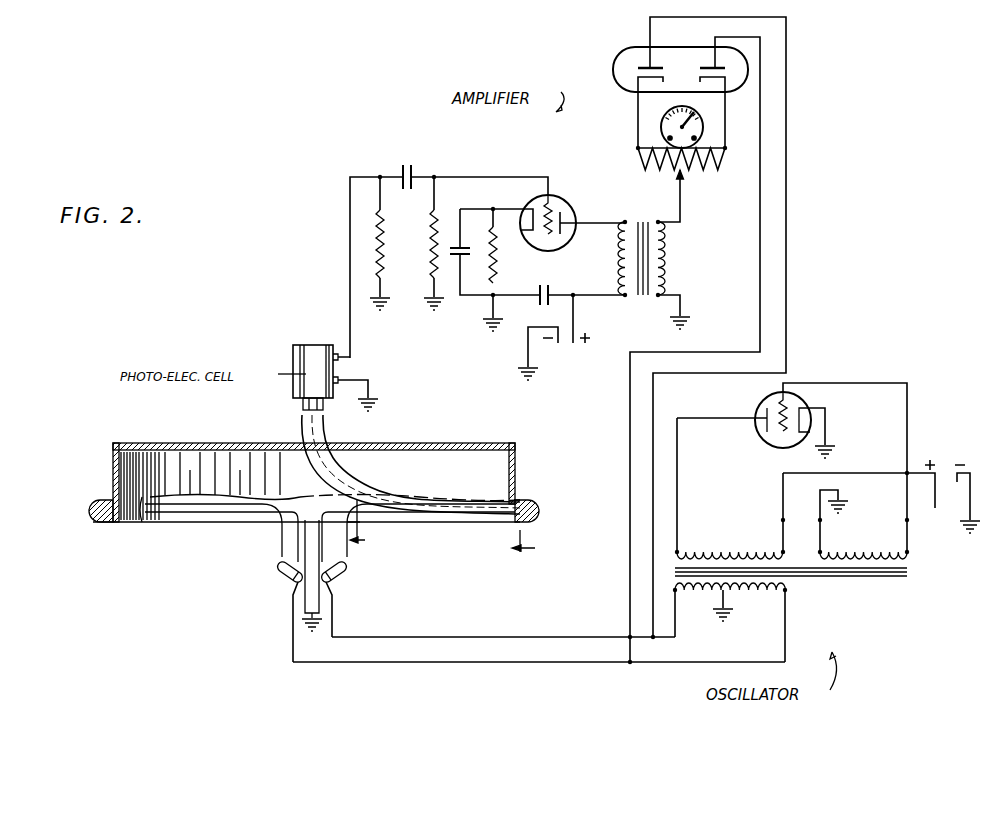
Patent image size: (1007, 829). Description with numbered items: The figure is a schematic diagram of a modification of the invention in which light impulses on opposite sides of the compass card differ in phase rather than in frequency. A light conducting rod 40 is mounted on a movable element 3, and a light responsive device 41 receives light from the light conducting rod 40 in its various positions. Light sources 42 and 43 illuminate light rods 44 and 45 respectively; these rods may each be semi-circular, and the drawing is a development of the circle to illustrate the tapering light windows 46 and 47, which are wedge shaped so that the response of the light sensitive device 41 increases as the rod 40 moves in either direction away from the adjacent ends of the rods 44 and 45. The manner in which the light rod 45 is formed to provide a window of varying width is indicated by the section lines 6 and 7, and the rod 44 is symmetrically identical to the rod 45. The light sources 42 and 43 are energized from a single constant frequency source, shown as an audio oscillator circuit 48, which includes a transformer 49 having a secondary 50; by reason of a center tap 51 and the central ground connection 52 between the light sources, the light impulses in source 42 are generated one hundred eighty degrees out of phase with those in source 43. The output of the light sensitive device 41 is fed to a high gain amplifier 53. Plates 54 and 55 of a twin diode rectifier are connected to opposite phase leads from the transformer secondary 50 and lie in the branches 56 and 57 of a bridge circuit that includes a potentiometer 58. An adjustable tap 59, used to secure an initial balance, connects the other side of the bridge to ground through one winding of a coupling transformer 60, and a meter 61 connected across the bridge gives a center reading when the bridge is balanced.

The movable element 3 is at (251, 443).
The section line 6 is at (350, 525).
The section line 7 is at (513, 542).
The light conducting rod 40 is at (390, 486).
The light responsive device 41 is at (303, 348).
The light source 42 is at (348, 573).
The light source 43 is at (280, 573).
The light rod 44 is at (210, 515).
The light rod 45 is at (417, 518).
The tapering light window 46 is at (160, 515).
The tapering light window 47 is at (385, 518).
The audio oscillator circuit 48 is at (860, 352).
The transformer 49 is at (900, 578).
The secondary 50 is at (760, 545).
The center tap 51 is at (733, 618).
The central ground connection 52 is at (322, 614).
The high gain amplifier 53 is at (567, 148).
The plate 54 is at (648, 65).
The plate 55 is at (716, 67).
The branch 56 is at (638, 133).
The branch 57 is at (725, 130).
The potentiometer 58 is at (660, 170).
The adjustable tap 59 is at (684, 185).
The coupling transformer 60 is at (662, 258).
The meter 61 is at (692, 110).